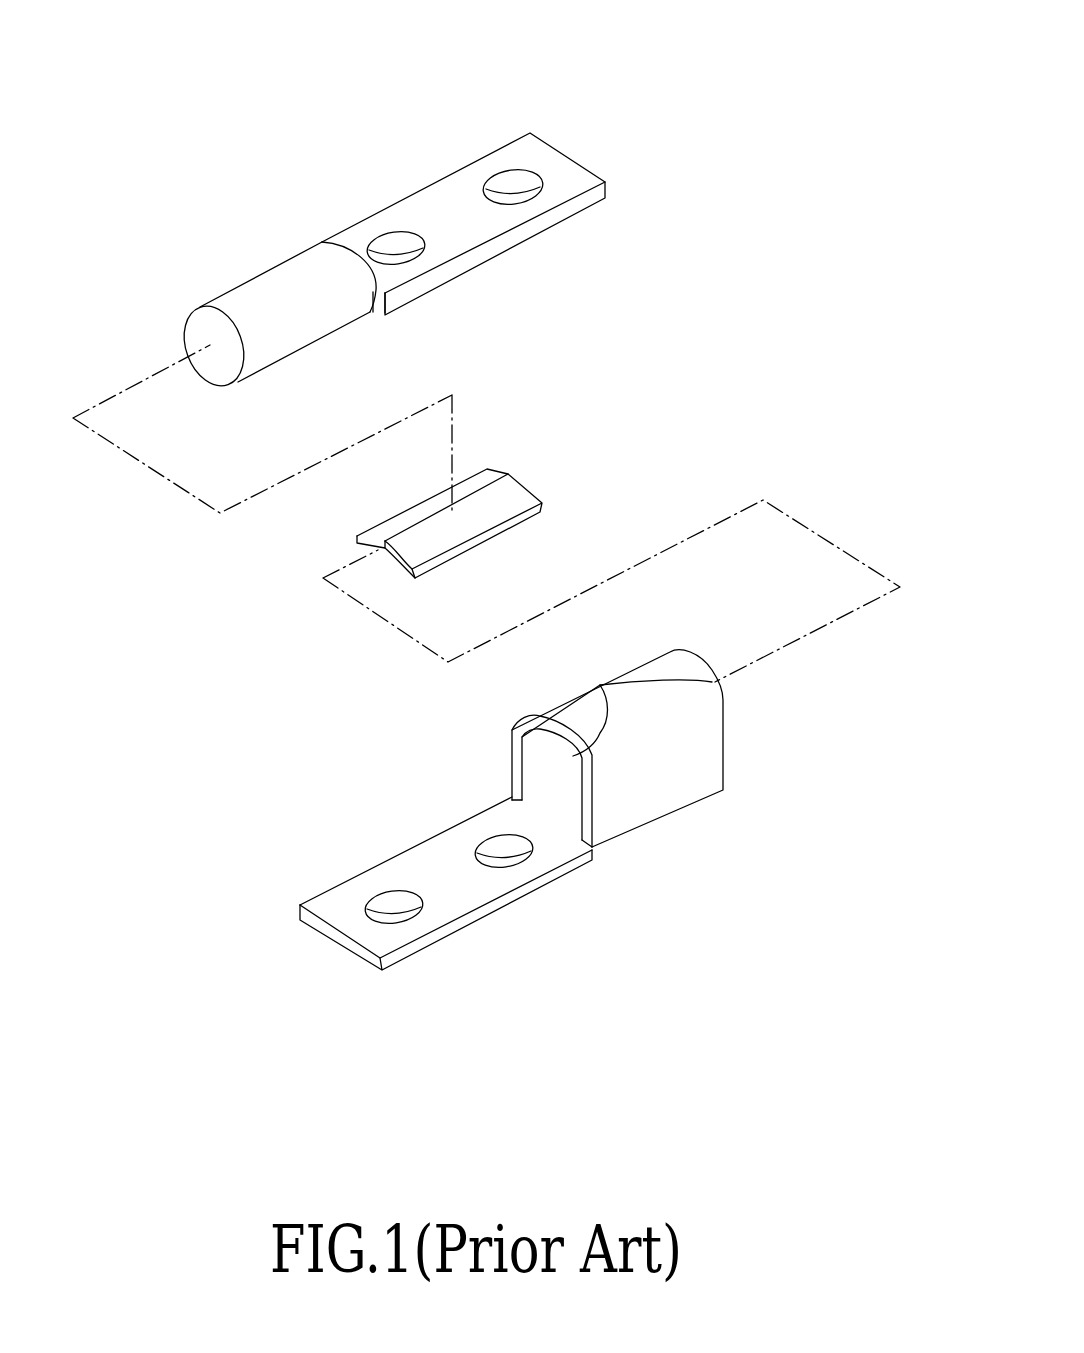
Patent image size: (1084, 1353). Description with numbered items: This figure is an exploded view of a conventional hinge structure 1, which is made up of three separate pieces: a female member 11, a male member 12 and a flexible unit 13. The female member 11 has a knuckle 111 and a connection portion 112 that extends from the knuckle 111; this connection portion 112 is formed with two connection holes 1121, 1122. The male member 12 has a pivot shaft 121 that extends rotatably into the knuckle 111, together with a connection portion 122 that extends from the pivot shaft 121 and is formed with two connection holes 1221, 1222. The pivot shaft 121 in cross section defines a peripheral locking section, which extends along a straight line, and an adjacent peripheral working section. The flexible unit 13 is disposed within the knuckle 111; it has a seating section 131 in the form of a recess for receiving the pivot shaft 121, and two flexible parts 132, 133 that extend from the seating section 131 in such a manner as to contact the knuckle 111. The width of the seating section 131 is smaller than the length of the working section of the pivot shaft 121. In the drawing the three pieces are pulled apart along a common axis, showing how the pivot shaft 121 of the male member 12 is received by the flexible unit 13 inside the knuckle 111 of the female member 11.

The hinge structure 1 is at (850, 88).
The male member 12 is at (635, 135).
The pivot shaft 121 is at (308, 332).
The connection portion 122 is at (463, 187).
The connection hole 1221 is at (392, 238).
The connection hole 1222 is at (512, 177).
The flexible unit 13 is at (676, 418).
The seating section 131 is at (507, 472).
The flexible part 132 is at (388, 523).
The flexible part 133 is at (500, 513).
The female member 11 is at (778, 732).
The knuckle 111 is at (672, 803).
The connection portion 112 is at (446, 857).
The connection hole 1121 is at (390, 898).
The connection hole 1122 is at (505, 845).